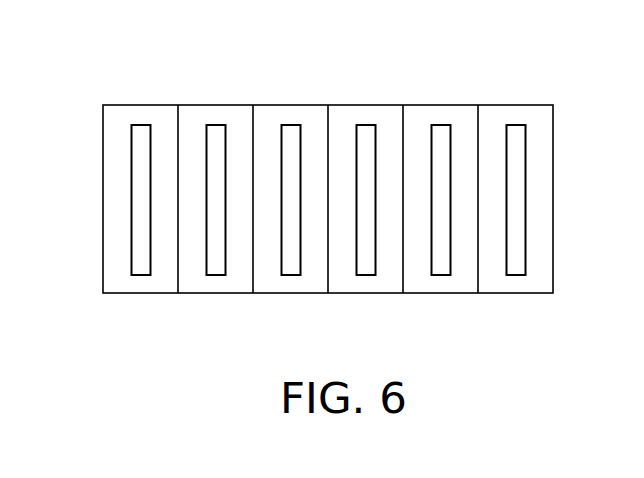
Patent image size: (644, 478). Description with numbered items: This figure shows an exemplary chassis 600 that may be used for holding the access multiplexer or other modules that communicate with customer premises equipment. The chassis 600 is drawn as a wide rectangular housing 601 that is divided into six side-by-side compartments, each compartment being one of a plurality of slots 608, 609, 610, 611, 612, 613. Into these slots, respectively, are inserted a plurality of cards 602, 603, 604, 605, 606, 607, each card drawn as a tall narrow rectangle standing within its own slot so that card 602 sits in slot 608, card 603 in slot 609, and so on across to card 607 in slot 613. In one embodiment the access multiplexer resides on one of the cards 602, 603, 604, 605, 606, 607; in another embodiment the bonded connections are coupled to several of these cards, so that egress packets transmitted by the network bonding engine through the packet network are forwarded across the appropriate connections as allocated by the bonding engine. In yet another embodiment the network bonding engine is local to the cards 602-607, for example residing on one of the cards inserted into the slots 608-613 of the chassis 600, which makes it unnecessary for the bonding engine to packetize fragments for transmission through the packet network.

The chassis 600 is at (377, 47).
The housing 601 is at (554, 160).
The card 602 is at (141, 125).
The card 603 is at (216, 125).
The card 604 is at (291, 125).
The card 605 is at (366, 125).
The card 606 is at (441, 125).
The card 607 is at (516, 125).
The slot 608 is at (115, 282).
The slot 609 is at (192, 282).
The slot 610 is at (267, 282).
The slot 611 is at (342, 282).
The slot 612 is at (417, 282).
The slot 613 is at (492, 282).